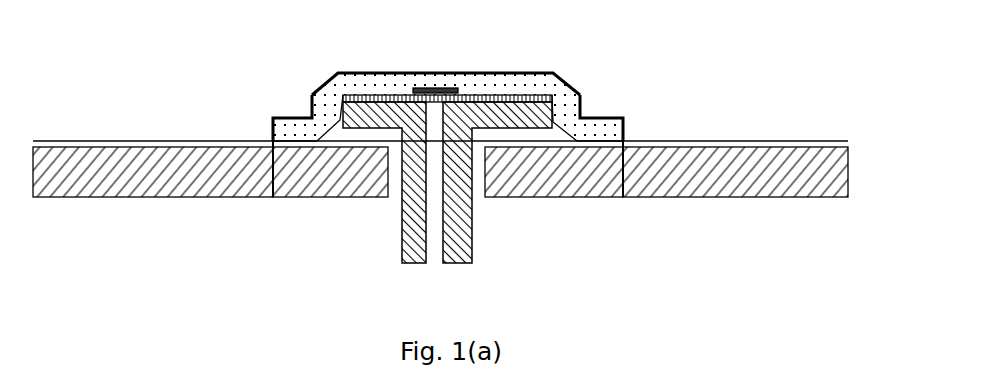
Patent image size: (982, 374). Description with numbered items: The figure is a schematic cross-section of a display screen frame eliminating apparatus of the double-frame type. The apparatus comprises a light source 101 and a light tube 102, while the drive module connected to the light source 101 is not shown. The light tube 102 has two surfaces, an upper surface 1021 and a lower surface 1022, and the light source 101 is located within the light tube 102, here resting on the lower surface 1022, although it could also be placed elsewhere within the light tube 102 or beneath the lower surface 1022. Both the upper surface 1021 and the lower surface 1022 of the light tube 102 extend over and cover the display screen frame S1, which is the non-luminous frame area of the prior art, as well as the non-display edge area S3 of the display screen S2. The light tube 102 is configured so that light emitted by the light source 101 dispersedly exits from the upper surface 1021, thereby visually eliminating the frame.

The light source 101 is at (365, 64).
The light tube 102 is at (465, 86).
The upper surface 1021 is at (236, 103).
The lower surface 1022 is at (630, 99).
The display screen frame S1 is at (361, 182).
The display screen S2 is at (440, 142).
The non-display edge area S3 is at (457, 193).